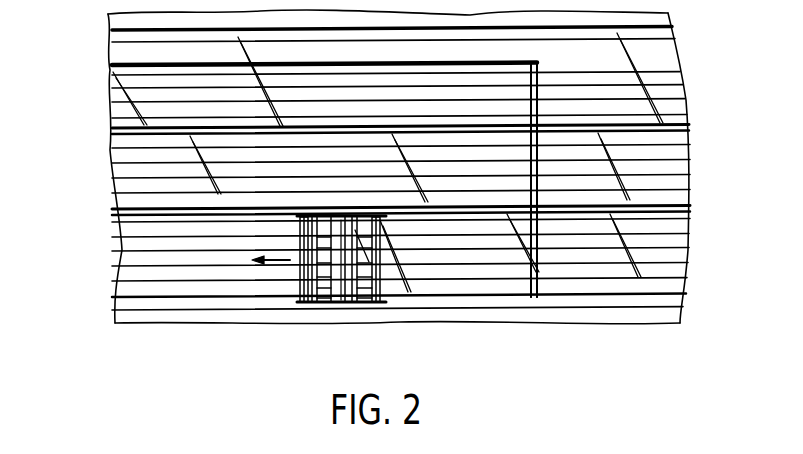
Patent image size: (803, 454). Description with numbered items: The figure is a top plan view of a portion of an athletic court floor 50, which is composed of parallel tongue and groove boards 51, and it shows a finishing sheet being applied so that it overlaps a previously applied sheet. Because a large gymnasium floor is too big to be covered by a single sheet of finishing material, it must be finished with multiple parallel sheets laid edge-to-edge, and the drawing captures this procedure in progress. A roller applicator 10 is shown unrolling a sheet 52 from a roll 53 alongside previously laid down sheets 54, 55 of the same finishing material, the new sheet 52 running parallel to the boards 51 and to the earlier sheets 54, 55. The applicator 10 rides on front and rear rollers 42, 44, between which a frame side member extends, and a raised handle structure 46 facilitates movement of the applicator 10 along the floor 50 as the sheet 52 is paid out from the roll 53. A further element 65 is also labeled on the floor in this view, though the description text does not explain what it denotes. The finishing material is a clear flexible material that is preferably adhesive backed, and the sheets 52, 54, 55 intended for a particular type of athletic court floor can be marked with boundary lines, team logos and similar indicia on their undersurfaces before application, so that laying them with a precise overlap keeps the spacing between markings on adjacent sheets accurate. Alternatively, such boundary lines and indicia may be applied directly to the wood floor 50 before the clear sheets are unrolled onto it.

The roller applicator apparatus 10 is at (329, 322).
The front roller 42 is at (300, 299).
The rear roller 44 is at (379, 268).
The raised handle structure 46 is at (315, 305).
The floor 50 is at (96, 73).
The tongue and groove boards 51 is at (135, 260).
The sheet 52 is at (384, 300).
The roll 53 is at (358, 300).
The previously laid sheet 54 is at (128, 97).
The previously laid sheet 55 is at (128, 170).
The conductor lead 65 is at (537, 279).